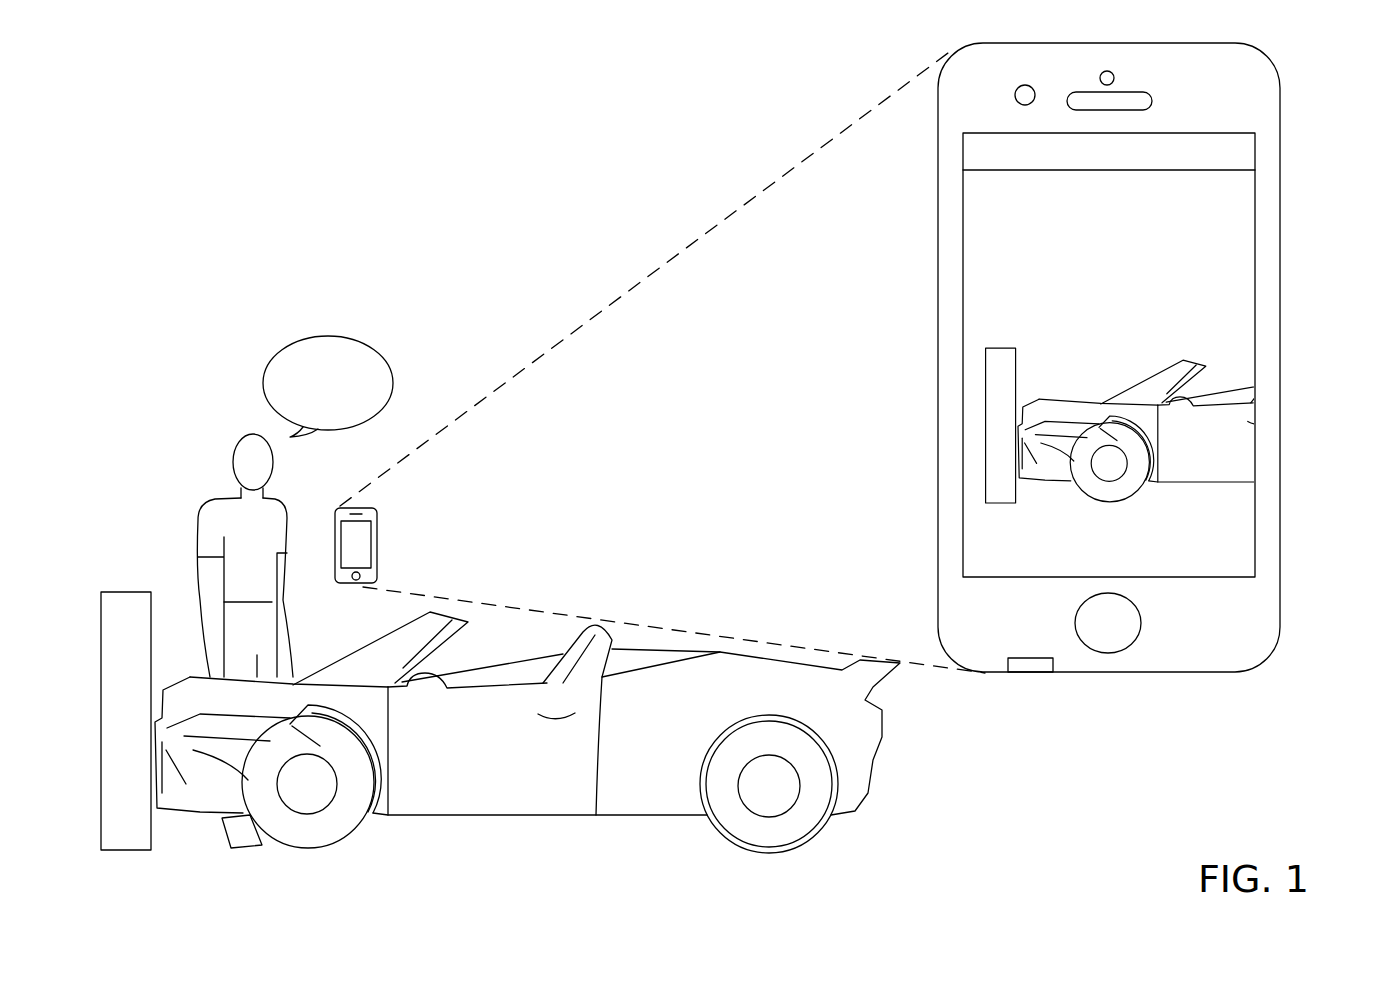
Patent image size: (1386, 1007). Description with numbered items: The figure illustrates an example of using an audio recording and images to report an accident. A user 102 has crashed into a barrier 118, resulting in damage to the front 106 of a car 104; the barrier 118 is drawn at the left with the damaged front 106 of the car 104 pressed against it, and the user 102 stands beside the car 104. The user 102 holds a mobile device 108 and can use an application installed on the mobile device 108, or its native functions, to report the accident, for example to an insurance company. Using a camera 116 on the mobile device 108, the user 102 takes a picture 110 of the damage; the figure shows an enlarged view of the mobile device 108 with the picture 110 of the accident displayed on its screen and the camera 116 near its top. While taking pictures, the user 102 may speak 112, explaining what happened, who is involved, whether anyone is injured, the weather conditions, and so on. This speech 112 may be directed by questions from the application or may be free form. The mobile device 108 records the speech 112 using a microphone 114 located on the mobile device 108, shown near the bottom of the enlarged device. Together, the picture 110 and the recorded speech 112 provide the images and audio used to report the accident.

The user 102 is at (200, 503).
The car 104 is at (882, 737).
The front 106 is at (233, 857).
The mobile device 108 is at (378, 538).
The picture 110 is at (1077, 329).
The speech 112 is at (377, 350).
The microphone 114 is at (1033, 673).
The camera 116 is at (1015, 93).
The barrier 118 is at (123, 592).